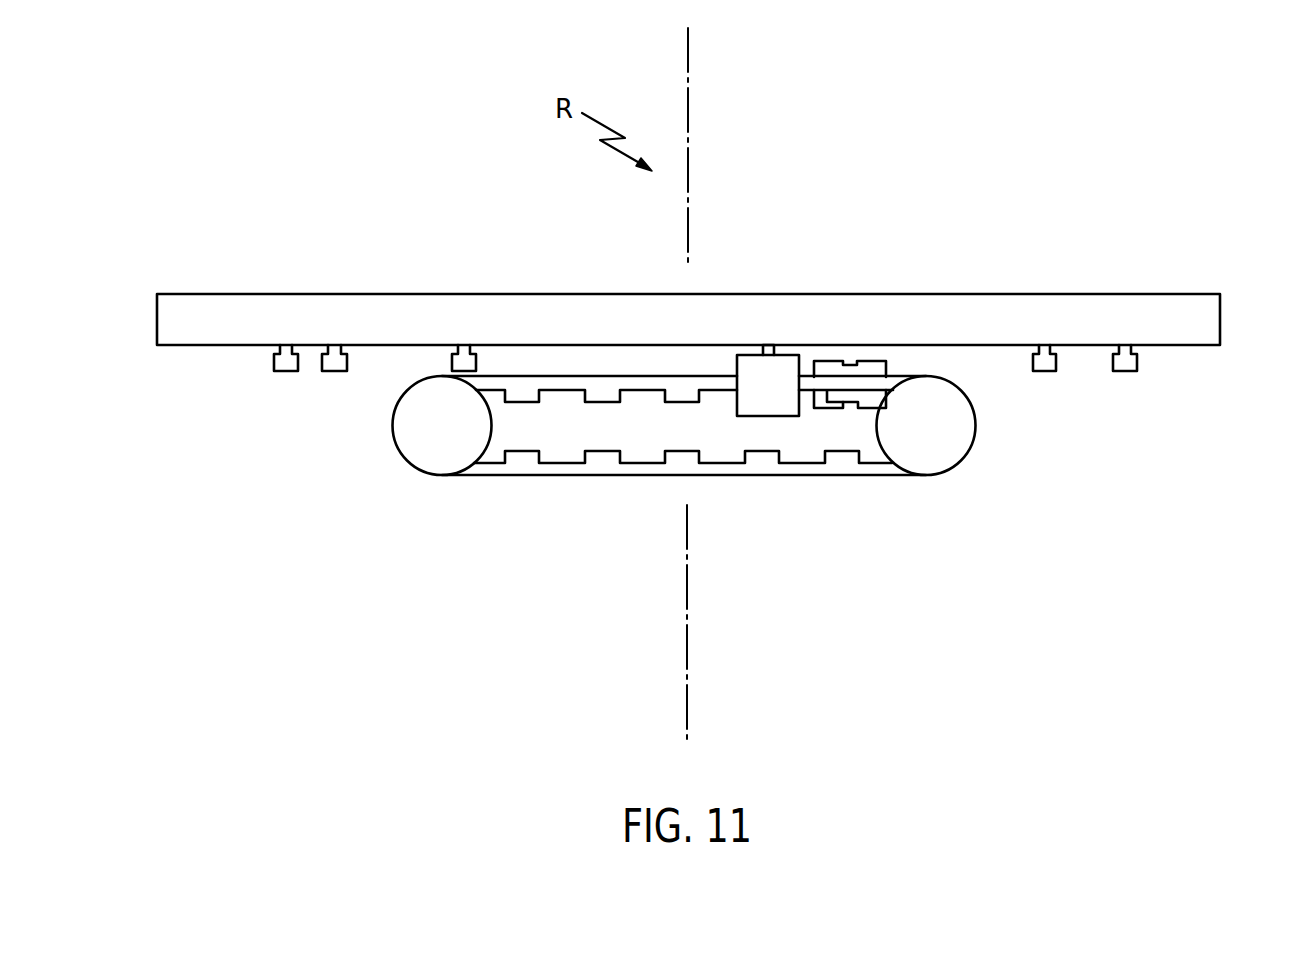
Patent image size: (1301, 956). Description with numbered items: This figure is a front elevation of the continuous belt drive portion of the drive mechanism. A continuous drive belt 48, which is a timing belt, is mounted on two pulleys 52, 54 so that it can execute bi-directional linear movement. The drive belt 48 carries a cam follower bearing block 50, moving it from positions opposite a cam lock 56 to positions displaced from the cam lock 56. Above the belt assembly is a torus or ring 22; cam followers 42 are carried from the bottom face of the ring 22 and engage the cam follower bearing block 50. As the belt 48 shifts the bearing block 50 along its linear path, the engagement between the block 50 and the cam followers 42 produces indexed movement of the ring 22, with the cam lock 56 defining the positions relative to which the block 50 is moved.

The torus/ring 22 is at (1220, 295).
The cam followers 42 is at (332, 371).
The continuous drive belt 48 is at (603, 462).
The cam follower bearing block 50 is at (772, 402).
The pulley 52 is at (413, 445).
The pulley 54 is at (950, 445).
The cam lock 56 is at (872, 367).